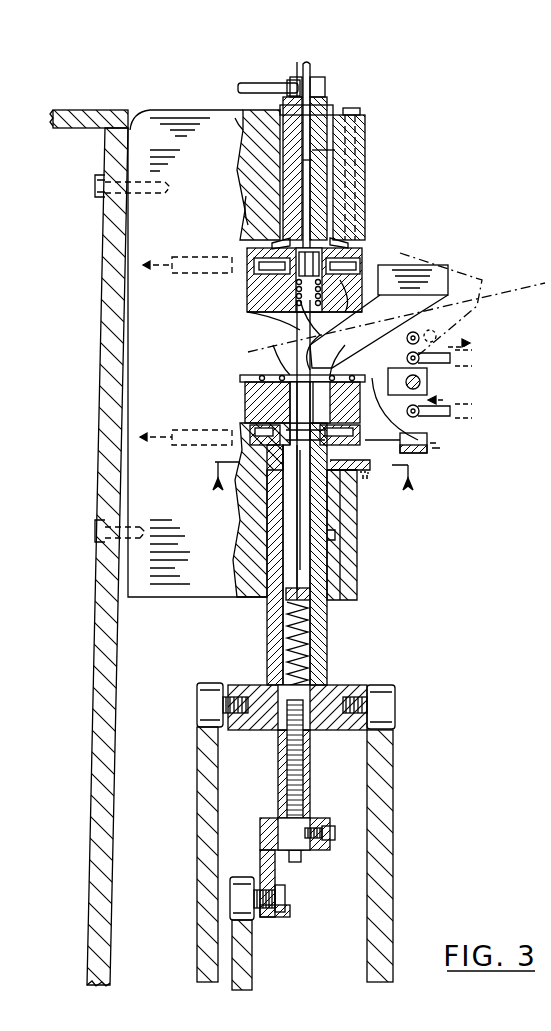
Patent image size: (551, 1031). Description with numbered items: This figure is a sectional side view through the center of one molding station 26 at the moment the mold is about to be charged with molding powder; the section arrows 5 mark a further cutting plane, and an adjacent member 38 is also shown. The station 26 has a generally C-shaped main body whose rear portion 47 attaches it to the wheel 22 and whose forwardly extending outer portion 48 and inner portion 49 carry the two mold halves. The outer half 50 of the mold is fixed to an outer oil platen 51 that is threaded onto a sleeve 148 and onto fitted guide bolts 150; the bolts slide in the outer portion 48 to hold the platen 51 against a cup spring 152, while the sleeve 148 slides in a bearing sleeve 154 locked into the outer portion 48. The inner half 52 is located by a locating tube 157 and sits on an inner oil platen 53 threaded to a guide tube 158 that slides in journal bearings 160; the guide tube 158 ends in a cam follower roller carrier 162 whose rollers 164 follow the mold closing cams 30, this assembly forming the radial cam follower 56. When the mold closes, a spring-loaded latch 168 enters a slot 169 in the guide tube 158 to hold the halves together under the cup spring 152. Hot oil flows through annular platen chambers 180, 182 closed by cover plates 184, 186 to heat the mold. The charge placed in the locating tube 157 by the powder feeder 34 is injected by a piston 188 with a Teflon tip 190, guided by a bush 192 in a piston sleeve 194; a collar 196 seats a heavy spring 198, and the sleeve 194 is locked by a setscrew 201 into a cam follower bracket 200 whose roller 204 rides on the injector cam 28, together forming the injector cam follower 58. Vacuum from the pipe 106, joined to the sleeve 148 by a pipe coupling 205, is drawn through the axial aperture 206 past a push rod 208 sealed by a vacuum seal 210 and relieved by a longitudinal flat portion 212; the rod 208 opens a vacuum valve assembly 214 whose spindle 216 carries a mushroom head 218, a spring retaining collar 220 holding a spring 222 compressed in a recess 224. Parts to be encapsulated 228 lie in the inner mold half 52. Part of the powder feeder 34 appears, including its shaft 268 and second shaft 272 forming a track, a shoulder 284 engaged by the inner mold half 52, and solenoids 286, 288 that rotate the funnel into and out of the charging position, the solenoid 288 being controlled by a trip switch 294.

The section line 5- 5 is at (312, 477).
The wheel 22 is at (90, 963).
The station 26 is at (398, 180).
The injector cam 28 is at (252, 980).
The mold closing cams 30 is at (197, 825).
The powder feeder 34 is at (495, 297).
The flange 38 is at (92, 806).
The rear portion 47 is at (125, 305).
The outer portion 48 is at (197, 170).
The inner portion 49 is at (144, 515).
The outer half of the mold 50 is at (370, 290).
The outer oil platen 51 is at (368, 250).
The inner half of the mold 52 is at (245, 397).
The inner oil platen 53 is at (250, 440).
The radial cam follower 56 is at (335, 665).
The injector cam follower 58 is at (314, 775).
The vacuum pipe 106 is at (255, 82).
The sleeve 148 is at (325, 102).
The fitted guide bolts 150 is at (357, 150).
The cup spring 152 is at (250, 200).
The bearing sleeve 154 is at (330, 146).
The locating tube 157 is at (290, 402).
The guide tube 158 is at (348, 590).
The journal bearings 160 is at (345, 510).
The cam follower roller carrier 162 is at (350, 732).
The cam follower rollers 164 is at (205, 712).
The spring-loaded latch 168 is at (385, 482).
The slot 169 is at (340, 560).
The annular platen chamber 180 is at (365, 262).
The annular platen chamber 182 is at (272, 470).
The cover plate 184 is at (432, 262).
The cover plate 186 is at (262, 426).
The piston 188 is at (300, 545).
The Teflon tip 190 is at (290, 538).
The bush 192 is at (288, 590).
The piston sleeve 194 is at (285, 738).
The collar 196 is at (286, 618).
The heavy spring 198 is at (290, 665).
The cam follower bracket 200 is at (305, 855).
The setscrew 201 is at (330, 838).
The roller 204 is at (238, 898).
The pipe coupling 205 is at (291, 72).
The axial aperture 206 is at (242, 128).
The vacuum valve push rod 208 is at (312, 64).
The vacuum seal 210 is at (318, 78).
The longitudinal flat portion 212 is at (309, 162).
The vacuum valve assembly 214 is at (290, 290).
The spindle 216 is at (298, 304).
The mushroom head 218 is at (262, 316).
The spring retaining collar 220 is at (282, 245).
The spring 222 is at (252, 266).
The recess 224 is at (312, 323).
The parts to be encapsulated 228 is at (330, 378).
The shaft 268 is at (422, 382).
The second shaft 272 is at (421, 335).
The shoulder 284 is at (418, 440).
The solenoid 286 is at (465, 411).
The solenoid 288 is at (465, 355).
The trip switch 294 is at (430, 448).